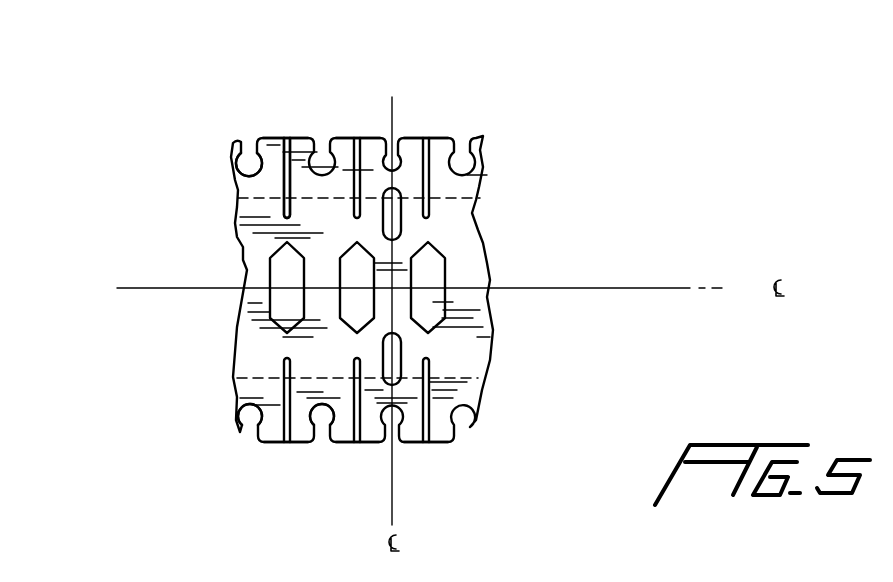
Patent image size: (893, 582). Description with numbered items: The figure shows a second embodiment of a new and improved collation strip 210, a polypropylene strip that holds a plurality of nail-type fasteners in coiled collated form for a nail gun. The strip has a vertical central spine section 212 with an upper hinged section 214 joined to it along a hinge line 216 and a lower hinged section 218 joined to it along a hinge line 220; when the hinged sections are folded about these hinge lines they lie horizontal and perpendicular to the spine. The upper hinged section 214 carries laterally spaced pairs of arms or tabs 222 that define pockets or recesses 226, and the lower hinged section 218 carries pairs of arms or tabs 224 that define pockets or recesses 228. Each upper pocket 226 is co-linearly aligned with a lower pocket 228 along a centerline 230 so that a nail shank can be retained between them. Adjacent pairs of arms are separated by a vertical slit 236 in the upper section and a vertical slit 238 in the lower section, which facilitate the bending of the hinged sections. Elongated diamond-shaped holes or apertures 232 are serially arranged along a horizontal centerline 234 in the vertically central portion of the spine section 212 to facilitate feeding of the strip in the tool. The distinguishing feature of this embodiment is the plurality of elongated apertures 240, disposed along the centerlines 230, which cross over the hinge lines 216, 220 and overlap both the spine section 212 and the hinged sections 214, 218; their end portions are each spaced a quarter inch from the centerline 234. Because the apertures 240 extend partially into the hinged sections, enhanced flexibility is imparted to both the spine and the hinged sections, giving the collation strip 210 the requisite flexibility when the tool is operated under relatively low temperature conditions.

The collation strip 210 is at (432, 298).
The spine section 212 is at (467, 248).
The upper hinged section 214 is at (483, 170).
The hinge line 216 is at (483, 203).
The lower hinged section 218 is at (473, 392).
The hinge line 220 is at (465, 373).
The arms or tabs 222 is at (302, 137).
The arms or tabs 224 is at (410, 437).
The pockets or recesses 226 is at (228, 152).
The pockets or recesses 228 is at (323, 423).
The centerlines 230 is at (393, 490).
The diamond-shaped holes or apertures 232 is at (445, 307).
The centerline 234 is at (233, 290).
The vertical slit 236 is at (290, 188).
The vertical slit 238 is at (260, 403).
The elongated apertures 240 is at (403, 140).